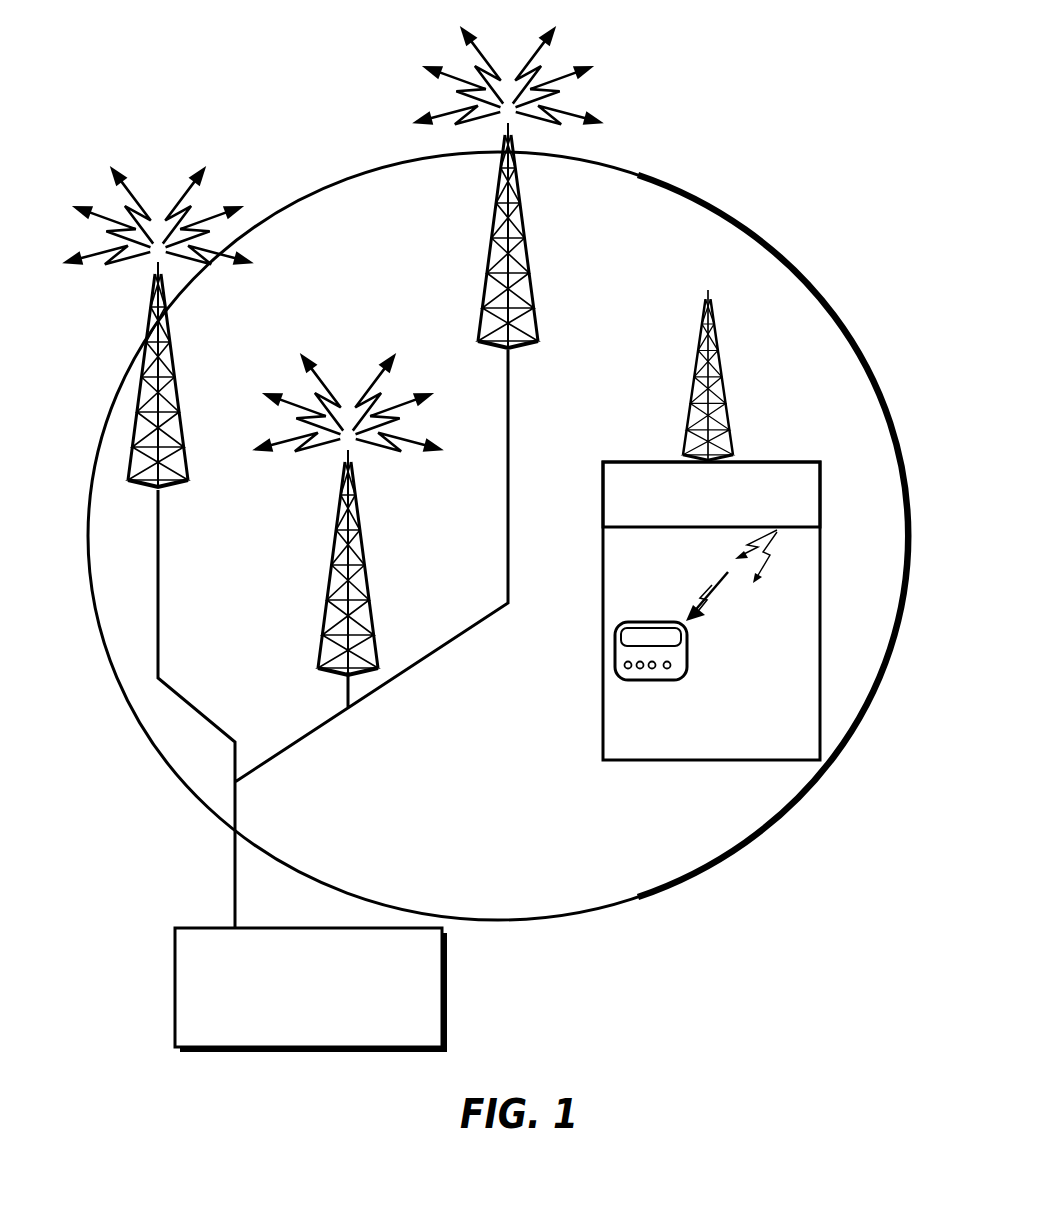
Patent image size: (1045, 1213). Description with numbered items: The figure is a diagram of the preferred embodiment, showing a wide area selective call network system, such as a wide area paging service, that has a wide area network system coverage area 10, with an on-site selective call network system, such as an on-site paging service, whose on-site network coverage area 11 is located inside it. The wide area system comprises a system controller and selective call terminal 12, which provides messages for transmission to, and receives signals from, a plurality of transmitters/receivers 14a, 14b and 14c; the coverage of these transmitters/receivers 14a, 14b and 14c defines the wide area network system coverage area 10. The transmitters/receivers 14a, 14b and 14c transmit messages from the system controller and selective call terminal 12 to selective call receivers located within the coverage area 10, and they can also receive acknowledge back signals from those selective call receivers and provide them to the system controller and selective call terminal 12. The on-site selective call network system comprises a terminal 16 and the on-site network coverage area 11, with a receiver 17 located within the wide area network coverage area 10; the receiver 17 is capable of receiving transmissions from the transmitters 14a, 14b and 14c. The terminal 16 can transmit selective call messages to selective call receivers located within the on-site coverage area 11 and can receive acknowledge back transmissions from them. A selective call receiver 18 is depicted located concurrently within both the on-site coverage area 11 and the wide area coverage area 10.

The wide area network system coverage area 10 is at (673, 890).
The on-site network coverage area 11 is at (823, 613).
The system controller and selective call terminal 12 is at (175, 975).
The transmitter/receiver 14a is at (368, 550).
The transmitter/receiver 14b is at (168, 400).
The transmitter/receiver 14c is at (522, 198).
The terminal 16 is at (820, 510).
The receiver 17 is at (730, 415).
The selective call receiver 18 is at (687, 663).